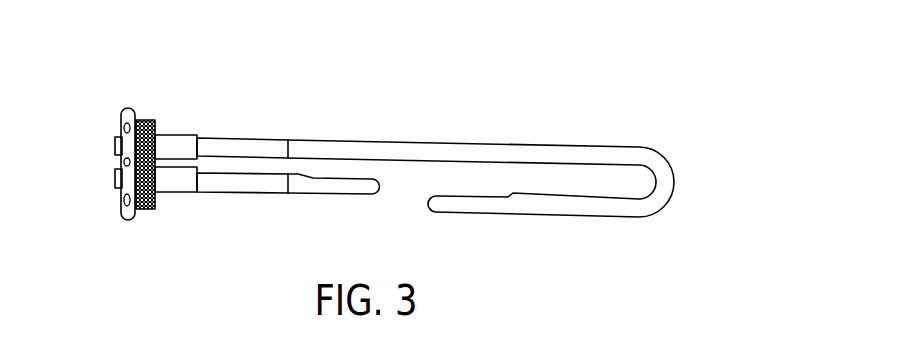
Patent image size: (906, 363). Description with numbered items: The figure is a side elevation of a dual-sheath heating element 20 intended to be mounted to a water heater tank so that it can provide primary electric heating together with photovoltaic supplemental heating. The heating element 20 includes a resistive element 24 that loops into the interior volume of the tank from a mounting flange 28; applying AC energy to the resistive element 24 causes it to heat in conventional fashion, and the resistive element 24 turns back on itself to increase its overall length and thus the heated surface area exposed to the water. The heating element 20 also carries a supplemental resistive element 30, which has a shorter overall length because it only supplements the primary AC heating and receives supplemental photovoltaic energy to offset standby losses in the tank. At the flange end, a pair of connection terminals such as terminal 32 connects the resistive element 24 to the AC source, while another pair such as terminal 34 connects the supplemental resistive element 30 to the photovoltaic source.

The heating element 20 is at (470, 93).
The resistive element 24 is at (548, 213).
The mounting flange 28 is at (147, 119).
The supplemental resistive element 30 is at (243, 183).
The terminal 32 is at (117, 146).
The terminal 34 is at (117, 180).